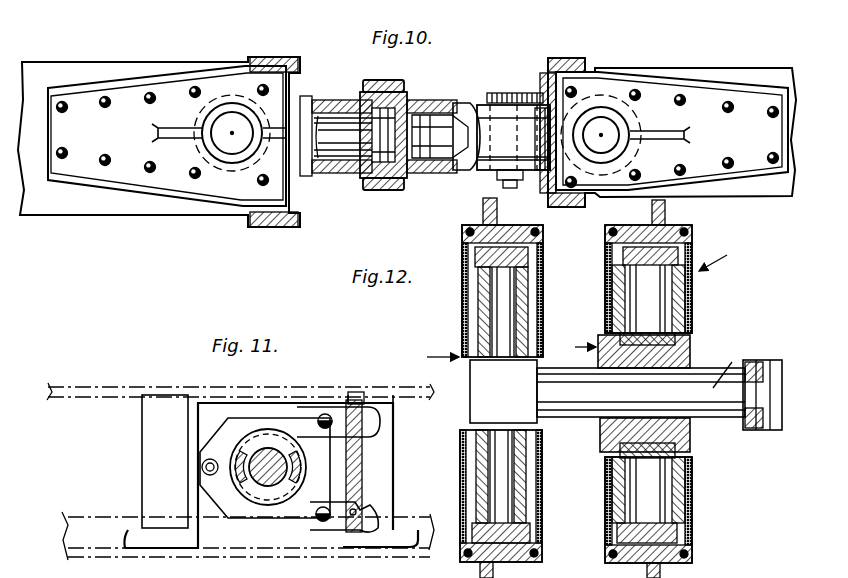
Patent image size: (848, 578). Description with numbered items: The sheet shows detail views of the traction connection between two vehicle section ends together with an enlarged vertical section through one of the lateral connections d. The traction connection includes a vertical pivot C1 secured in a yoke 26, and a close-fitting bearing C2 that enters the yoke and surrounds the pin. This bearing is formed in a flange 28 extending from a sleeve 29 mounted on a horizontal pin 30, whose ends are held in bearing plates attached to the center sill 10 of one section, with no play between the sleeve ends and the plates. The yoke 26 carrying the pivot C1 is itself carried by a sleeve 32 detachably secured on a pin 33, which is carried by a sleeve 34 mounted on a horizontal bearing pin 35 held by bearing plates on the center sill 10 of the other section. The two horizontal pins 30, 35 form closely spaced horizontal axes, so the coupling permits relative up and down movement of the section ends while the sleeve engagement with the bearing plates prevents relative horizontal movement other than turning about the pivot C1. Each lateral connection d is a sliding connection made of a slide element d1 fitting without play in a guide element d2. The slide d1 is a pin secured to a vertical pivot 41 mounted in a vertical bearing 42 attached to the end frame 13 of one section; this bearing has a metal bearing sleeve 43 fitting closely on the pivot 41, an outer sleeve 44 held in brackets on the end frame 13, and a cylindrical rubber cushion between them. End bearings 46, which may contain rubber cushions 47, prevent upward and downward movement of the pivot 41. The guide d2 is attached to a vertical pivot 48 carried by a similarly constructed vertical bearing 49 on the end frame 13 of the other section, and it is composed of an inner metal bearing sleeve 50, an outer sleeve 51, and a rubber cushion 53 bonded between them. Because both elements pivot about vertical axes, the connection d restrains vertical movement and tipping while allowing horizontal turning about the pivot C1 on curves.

In FIG. 10, the central sill 10 is at (153, 61).
In FIG. 11, the central sill 10 is at (146, 394).
In FIG. 12, the transverse end frame 13 is at (483, 212).
In FIG. 10, the yoke 26 is at (474, 101).
In FIG. 10, the flange 28 is at (540, 145).
In FIG. 10, the sleeve 29 is at (616, 97).
In FIG. 10, the horizontal pin 30 is at (610, 132).
In FIG. 10, the sleeve 32 is at (343, 100).
In FIG. 11, the sleeve 32 is at (310, 480).
In FIG. 10, the pin 33 is at (342, 145).
In FIG. 11, the pin 33 is at (262, 486).
In FIG. 10, the sleeve 34 is at (223, 176).
In FIG. 10, the horizontal bearing pin 35 is at (226, 134).
In FIG. 12, the vertical pivot 41 is at (492, 436).
In FIG. 12, the vertical bearing 42 is at (461, 318).
In FIG. 12, the metal bearing sleeve 43 is at (542, 294).
In FIG. 12, the outer sleeve 44 is at (461, 430).
In FIG. 12, the end bearing 46 is at (528, 262).
In FIG. 12, the rubber cushion 47 is at (536, 243).
In FIG. 12, the vertical pivot 48 is at (650, 302).
In FIG. 12, the vertical bearing 49 is at (604, 268).
In FIG. 12, the inner metal bearing sleeve 50 is at (597, 363).
In FIG. 12, the outer sleeve 51 is at (692, 348).
In FIG. 12, the rubber cushion 53 is at (696, 360).
In FIG. 10, the vertical pivot C1 is at (506, 91).
In FIG. 10, the bearing C2 is at (480, 160).
In FIG. 12, the lateral connection d is at (576, 309).
In FIG. 12, the slide element d1 is at (724, 365).
In FIG. 12, the guide element d2 is at (576, 338).